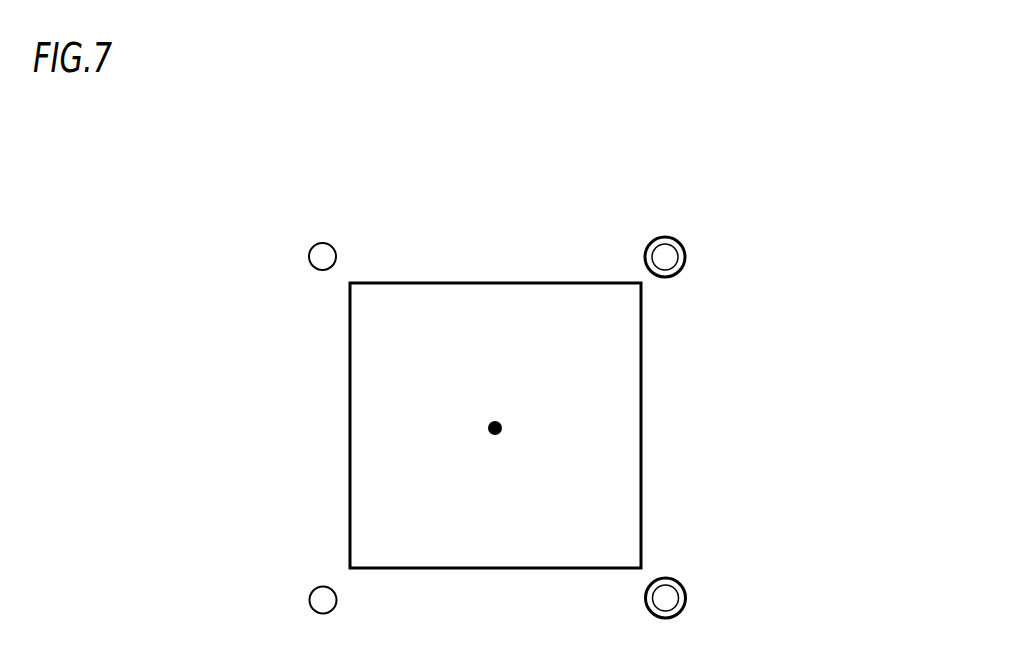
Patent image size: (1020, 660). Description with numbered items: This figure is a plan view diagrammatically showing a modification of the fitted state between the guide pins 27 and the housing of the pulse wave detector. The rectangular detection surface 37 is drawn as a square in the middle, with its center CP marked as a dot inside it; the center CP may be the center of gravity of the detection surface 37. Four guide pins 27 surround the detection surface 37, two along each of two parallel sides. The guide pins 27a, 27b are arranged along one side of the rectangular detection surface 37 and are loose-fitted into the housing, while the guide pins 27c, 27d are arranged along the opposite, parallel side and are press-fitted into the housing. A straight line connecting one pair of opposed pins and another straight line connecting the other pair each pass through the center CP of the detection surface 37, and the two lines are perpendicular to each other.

The detection surface 37 is at (500, 300).
The guide pins 27 is at (499, 425).
The guide pin 27a is at (684, 258).
The guide pin 27b is at (684, 597).
The guide pin 27c is at (318, 255).
The guide pin 27d is at (314, 590).
The center of the detection surface CP is at (503, 432).